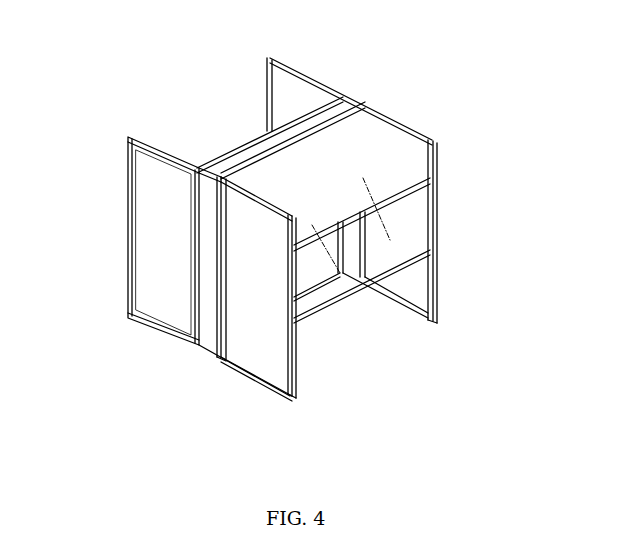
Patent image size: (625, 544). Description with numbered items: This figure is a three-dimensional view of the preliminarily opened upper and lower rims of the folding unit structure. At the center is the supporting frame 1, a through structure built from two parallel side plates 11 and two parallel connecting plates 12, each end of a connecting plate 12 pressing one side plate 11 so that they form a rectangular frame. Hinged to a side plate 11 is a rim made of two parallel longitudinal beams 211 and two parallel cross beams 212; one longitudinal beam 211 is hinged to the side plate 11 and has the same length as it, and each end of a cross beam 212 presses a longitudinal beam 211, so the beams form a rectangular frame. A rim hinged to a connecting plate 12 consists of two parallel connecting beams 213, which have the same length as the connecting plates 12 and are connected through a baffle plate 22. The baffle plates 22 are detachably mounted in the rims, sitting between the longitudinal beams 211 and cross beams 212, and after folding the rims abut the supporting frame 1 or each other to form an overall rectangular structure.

The supporting frame 1 is at (125, 227).
The side plate 11 is at (140, 242).
The connecting plate 12 is at (222, 165).
The longitudinal beam 211 is at (217, 327).
The cross beam 212 is at (273, 200).
The connecting beam 213 is at (268, 122).
The baffle plate 22 is at (430, 266).